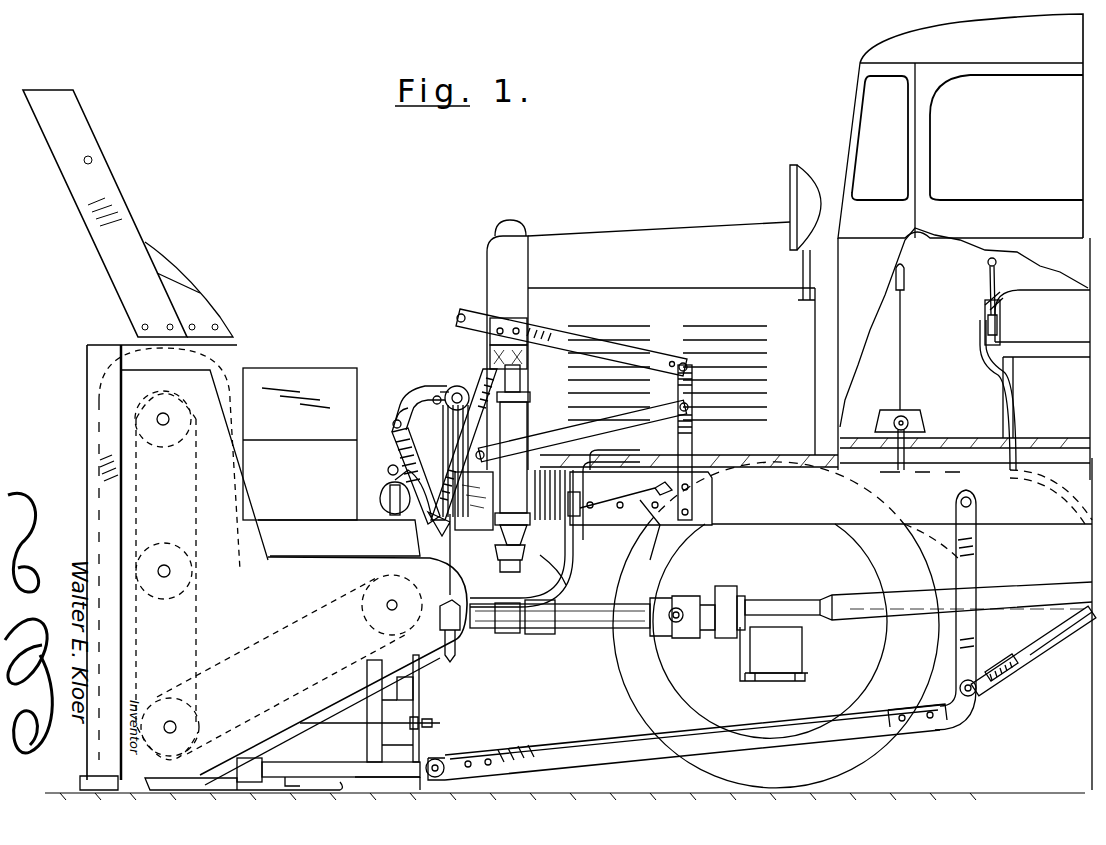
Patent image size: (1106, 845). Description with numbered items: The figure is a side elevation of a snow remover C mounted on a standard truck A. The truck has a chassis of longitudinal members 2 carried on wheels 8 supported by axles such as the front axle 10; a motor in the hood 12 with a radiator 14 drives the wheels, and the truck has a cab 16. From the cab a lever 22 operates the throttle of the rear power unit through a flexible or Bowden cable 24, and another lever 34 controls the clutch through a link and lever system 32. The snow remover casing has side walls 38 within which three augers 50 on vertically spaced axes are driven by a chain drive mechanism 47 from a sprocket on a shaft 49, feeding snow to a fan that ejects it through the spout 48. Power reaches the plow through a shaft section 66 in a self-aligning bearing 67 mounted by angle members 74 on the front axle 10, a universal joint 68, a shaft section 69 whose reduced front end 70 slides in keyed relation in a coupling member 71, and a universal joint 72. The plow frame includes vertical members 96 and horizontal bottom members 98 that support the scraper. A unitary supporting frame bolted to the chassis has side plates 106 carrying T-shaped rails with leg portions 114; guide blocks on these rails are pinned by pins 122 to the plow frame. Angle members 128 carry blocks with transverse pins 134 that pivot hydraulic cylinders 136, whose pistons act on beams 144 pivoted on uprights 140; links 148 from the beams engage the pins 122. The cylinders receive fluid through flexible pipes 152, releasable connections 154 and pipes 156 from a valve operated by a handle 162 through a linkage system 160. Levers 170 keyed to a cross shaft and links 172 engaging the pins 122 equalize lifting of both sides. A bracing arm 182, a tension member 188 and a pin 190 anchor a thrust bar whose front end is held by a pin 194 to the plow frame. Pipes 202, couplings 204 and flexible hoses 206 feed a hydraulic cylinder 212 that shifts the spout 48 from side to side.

The longitudinal members 2 is at (930, 520).
The wheels 8 is at (882, 770).
The front axle 10 is at (810, 652).
The hood 12 is at (670, 232).
The radiator 14 is at (486, 269).
The cab 16 is at (866, 58).
The lever 22 is at (1004, 290).
The flexible or Bowden cable 24 is at (1006, 390).
The link and lever system 32 is at (1060, 458).
The lever 34 is at (905, 370).
The side walls 38 is at (120, 437).
The chain drive mechanism 47 is at (292, 608).
The spout 48 is at (302, 372).
The shaft 49 is at (372, 592).
The augers or conveyers 50 is at (95, 385).
The shaft section 66 is at (1064, 588).
The flexible or self-aligning bearing 67 is at (735, 594).
The universal joint 68 is at (688, 600).
The shaft section 69 is at (590, 630).
The front end 70 is at (538, 630).
The coupling member 71 is at (505, 632).
The universal joint 72 is at (464, 633).
The angle members 74 is at (760, 690).
The vertical members 96 is at (428, 718).
The horizontal bottom members 98 is at (328, 760).
The side plates 106 is at (708, 502).
The leg portions 114 is at (438, 390).
The pins 122 is at (430, 530).
The angle members 128 is at (568, 560).
The transverse pins 134 is at (518, 568).
The hydraulic cylinders 136 is at (522, 423).
The uprights 140 is at (683, 440).
The beams or links 144 is at (590, 345).
The links 148 is at (488, 370).
The flexible pipes 152 is at (584, 540).
The releasable connections 154 is at (655, 532).
The pipes 156 is at (700, 465).
The linkage system 160 is at (1045, 345).
The handle 162 is at (985, 262).
The levers 170 is at (412, 400).
The links 172 is at (410, 455).
The bracing arm 182 is at (1068, 655).
The tension member 188 is at (977, 556).
The pin 190 is at (980, 696).
The pin 194 is at (445, 760).
The pipes 202 is at (578, 470).
The couplings 204 is at (586, 496).
The flexible hoses 206 is at (562, 585).
The hydraulic cylinder 212 is at (339, 521).
The truck A is at (725, 242).
The snow remover C is at (235, 340).